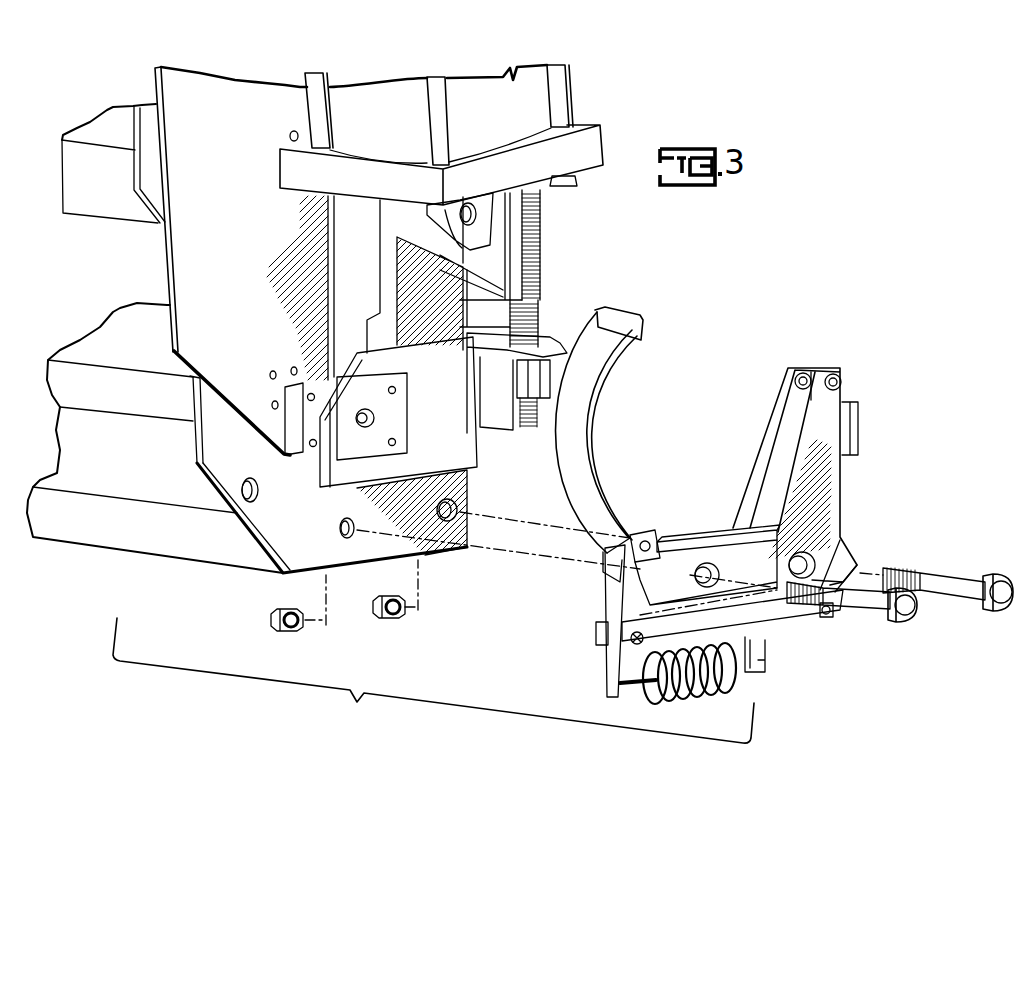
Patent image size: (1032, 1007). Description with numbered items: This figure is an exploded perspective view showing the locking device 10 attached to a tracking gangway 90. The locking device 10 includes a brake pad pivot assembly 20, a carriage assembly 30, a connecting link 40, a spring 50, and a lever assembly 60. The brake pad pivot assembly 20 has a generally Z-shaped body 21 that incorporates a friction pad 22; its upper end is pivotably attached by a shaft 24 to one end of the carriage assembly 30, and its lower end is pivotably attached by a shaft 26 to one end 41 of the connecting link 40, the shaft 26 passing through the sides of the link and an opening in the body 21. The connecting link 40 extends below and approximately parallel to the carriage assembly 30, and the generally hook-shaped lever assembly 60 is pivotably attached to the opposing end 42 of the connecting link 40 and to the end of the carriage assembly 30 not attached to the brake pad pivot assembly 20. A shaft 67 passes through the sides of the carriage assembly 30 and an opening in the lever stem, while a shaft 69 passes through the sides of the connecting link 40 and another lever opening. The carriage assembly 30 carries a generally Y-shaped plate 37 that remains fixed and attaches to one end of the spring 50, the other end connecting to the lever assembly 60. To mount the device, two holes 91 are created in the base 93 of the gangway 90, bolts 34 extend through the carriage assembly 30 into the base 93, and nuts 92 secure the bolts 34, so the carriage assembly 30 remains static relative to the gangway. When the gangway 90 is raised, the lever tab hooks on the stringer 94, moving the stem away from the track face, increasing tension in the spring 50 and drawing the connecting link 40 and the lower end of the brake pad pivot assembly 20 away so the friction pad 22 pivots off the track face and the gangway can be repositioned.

The locking device 10 is at (832, 301).
The brake pad pivot assembly 20 is at (854, 537).
The body 21 is at (847, 557).
The friction pad 22 is at (857, 423).
The shaft 24 is at (848, 382).
The shaft 26 is at (828, 614).
The carriage assembly 30 is at (711, 531).
The bolts 34 is at (977, 596).
The plate 37 is at (757, 645).
The connecting link 40 is at (759, 619).
The end 41 is at (795, 618).
The opposing end 42 is at (605, 630).
The spring 50 is at (690, 703).
The lever assembly 60 is at (579, 497).
The shaft 67 is at (628, 573).
The shaft 69 is at (632, 642).
The gangway 90 is at (104, 289).
The holes 91 is at (347, 540).
The nuts 92 is at (278, 625).
The base 93 is at (290, 565).
The stringer 94 is at (190, 268).